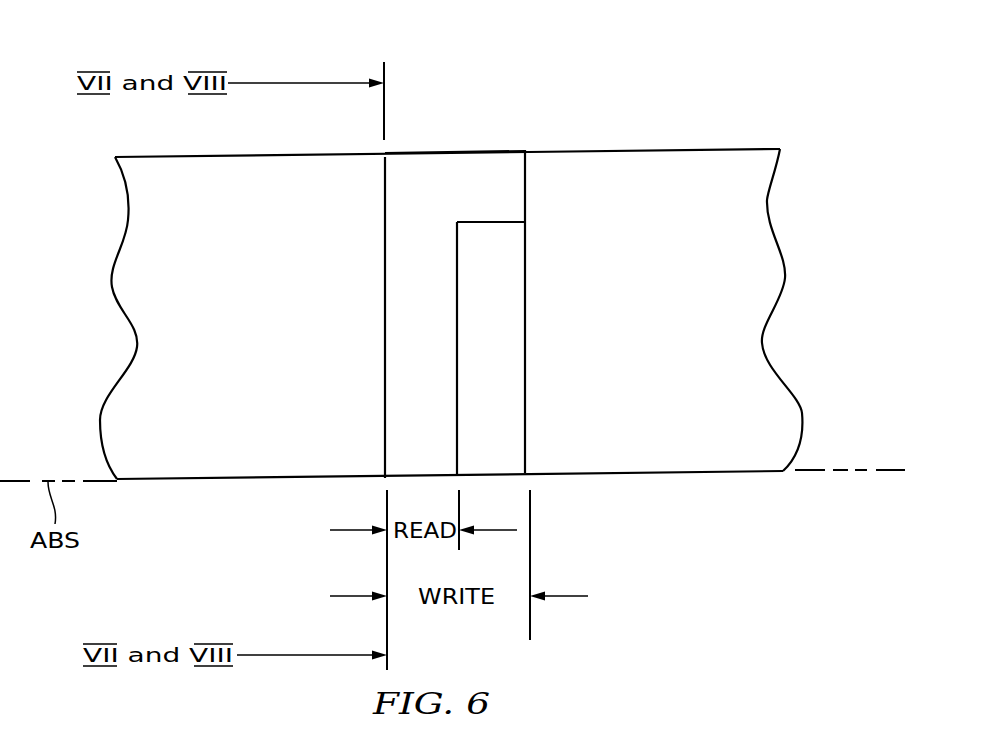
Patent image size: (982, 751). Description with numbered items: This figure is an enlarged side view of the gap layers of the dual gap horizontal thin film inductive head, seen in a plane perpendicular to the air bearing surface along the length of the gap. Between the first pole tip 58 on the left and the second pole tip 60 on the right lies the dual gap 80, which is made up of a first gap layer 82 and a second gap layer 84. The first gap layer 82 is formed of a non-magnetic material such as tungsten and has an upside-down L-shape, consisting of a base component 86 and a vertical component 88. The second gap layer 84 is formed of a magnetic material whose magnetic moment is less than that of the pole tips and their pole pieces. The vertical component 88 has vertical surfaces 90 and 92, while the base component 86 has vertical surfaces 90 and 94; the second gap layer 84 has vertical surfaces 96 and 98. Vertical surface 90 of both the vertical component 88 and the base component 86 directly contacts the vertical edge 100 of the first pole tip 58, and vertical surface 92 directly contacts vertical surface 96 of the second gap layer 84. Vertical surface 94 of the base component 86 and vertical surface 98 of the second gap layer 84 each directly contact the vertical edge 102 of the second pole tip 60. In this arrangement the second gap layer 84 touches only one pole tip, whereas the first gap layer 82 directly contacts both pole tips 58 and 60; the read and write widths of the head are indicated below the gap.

The first pole tip 58 is at (242, 190).
The second pole tip 60 is at (692, 178).
The dual gap 80 is at (468, 110).
The first gap layer 82 is at (435, 347).
The second gap layer 84 is at (505, 347).
The base component 86 is at (418, 192).
The vertical component 88 is at (405, 378).
The vertical surface 90 is at (385, 192).
The vertical surface 92 is at (458, 252).
The vertical surface 94 is at (525, 180).
The vertical surface 96 is at (458, 365).
The vertical surface 98 is at (527, 313).
The vertical edge 100 is at (389, 405).
The vertical edge 102 is at (530, 422).